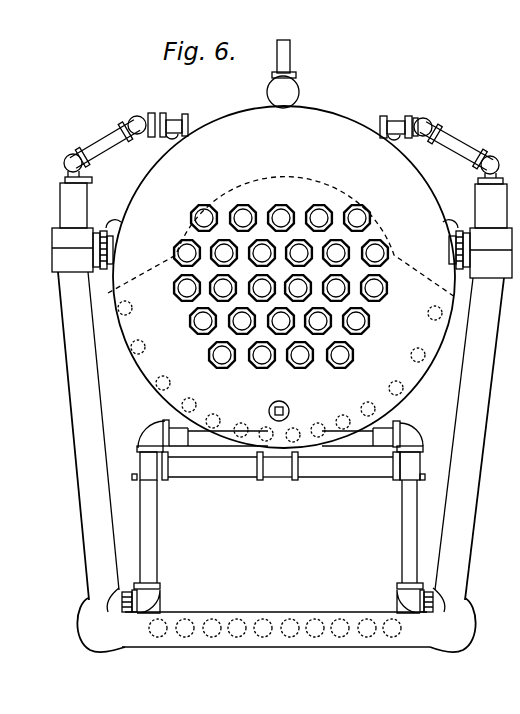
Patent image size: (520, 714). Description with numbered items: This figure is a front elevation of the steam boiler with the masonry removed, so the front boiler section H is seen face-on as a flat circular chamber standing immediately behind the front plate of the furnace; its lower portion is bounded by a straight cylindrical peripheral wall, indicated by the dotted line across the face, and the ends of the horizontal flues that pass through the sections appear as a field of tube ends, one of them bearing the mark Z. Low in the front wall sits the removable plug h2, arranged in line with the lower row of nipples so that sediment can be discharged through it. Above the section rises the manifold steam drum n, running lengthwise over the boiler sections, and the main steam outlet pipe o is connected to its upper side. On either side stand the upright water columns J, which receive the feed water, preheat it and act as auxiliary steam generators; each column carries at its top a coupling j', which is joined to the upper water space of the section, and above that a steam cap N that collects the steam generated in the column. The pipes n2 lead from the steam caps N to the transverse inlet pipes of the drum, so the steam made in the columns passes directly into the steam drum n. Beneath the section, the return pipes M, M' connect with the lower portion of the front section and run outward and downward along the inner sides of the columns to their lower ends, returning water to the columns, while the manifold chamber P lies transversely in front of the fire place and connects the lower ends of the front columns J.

The front boiler section H is at (238, 152).
The tube Z is at (281, 321).
The removable plug h2 is at (268, 409).
The manifold steam drum n is at (283, 92).
The main steam outlet pipe o is at (283, 62).
The pipes n2 is at (281, 145).
The steam cap N is at (74, 200).
The coupling j' is at (256, 249).
The water column J is at (269, 436).
The manifold chamber P is at (256, 607).
The return pipe M is at (271, 516).
The return pipe M' is at (280, 478).